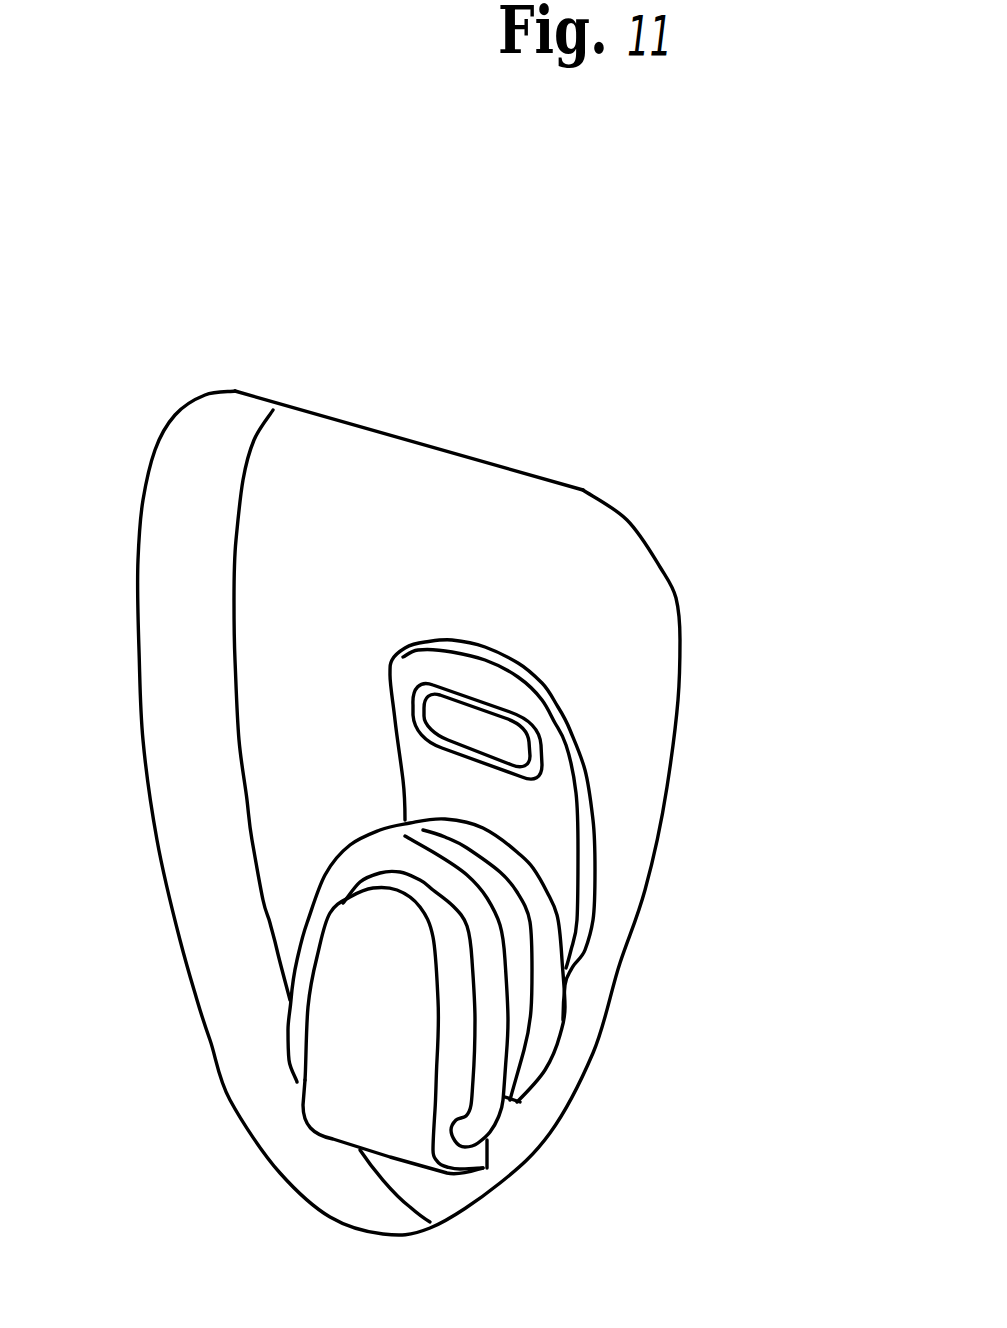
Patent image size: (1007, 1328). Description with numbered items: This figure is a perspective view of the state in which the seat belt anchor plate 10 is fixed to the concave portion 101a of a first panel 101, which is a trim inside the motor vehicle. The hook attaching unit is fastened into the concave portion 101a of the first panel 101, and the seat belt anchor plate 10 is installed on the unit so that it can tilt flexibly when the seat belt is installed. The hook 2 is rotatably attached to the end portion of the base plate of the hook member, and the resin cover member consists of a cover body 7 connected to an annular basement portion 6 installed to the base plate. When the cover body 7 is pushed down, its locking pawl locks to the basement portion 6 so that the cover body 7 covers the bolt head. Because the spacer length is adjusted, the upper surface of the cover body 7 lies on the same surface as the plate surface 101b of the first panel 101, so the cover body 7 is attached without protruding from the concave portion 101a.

The first panel 101 is at (817, 392).
The concave portion 101a is at (423, 542).
The plate surface 101b is at (860, 530).
The seat belt anchor plate 10 is at (567, 808).
The hook 2 is at (337, 877).
The annular basement portion 6 is at (533, 1021).
The cover body 7 is at (352, 1015).